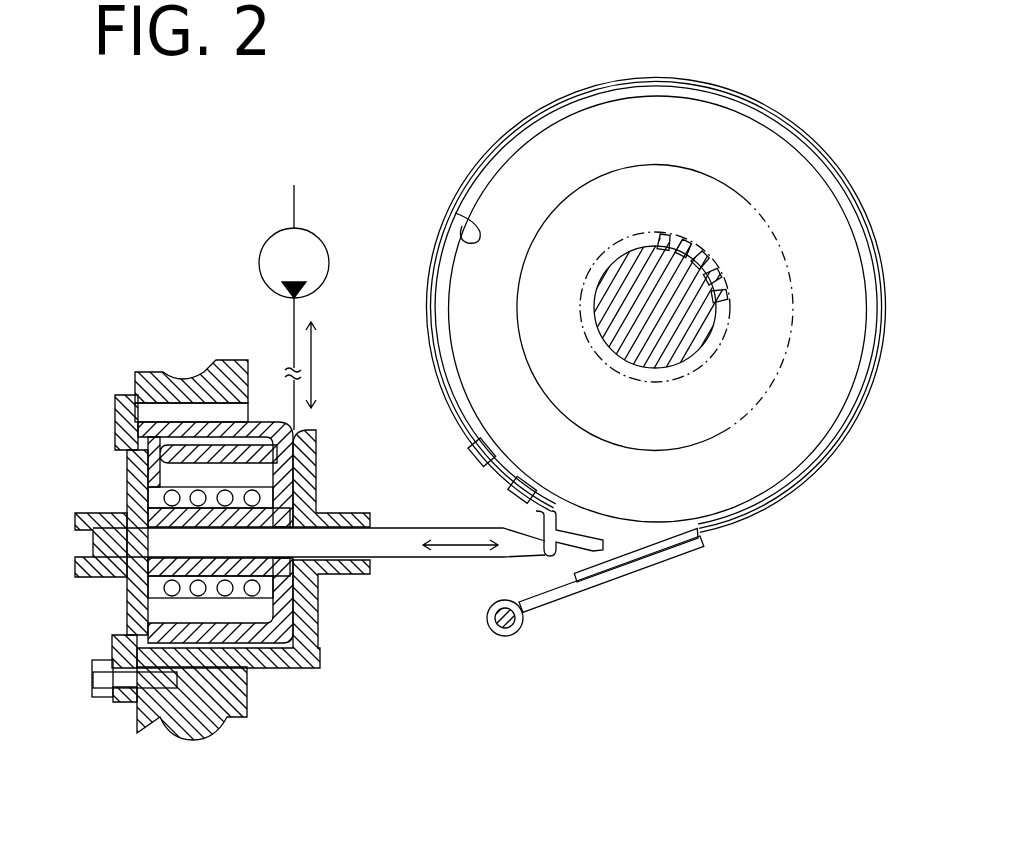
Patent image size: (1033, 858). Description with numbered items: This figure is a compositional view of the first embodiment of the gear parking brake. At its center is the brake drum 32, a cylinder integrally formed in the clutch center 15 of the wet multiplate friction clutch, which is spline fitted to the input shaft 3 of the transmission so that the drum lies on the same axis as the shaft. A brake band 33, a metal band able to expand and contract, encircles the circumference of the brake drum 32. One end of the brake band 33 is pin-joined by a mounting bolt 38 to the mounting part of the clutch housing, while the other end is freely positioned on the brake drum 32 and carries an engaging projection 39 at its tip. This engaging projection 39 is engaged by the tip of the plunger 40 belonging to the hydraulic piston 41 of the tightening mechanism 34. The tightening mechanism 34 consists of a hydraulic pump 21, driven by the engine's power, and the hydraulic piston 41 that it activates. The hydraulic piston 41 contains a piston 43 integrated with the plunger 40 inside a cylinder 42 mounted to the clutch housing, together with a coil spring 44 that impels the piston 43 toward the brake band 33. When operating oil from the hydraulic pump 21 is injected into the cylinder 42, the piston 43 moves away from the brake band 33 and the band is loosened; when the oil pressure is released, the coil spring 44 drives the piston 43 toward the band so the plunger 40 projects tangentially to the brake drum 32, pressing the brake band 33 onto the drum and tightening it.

The clutch center 15 is at (665, 280).
The input shaft 3 is at (688, 336).
The brake band 33 is at (680, 571).
The brake drum 32 is at (456, 214).
The engaging projection 39 is at (560, 553).
The mounting bolt 38 is at (505, 636).
The tightening mechanism 34 is at (390, 467).
The hydraulic pump 21 is at (258, 262).
The hydraulic piston 41 is at (300, 666).
The coil spring 44 is at (172, 472).
The piston 43 is at (300, 465).
The cylinder 42 is at (317, 612).
The plunger 40 is at (413, 527).